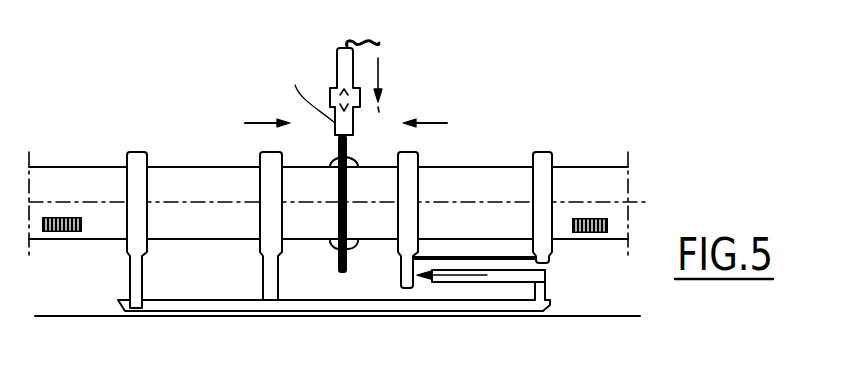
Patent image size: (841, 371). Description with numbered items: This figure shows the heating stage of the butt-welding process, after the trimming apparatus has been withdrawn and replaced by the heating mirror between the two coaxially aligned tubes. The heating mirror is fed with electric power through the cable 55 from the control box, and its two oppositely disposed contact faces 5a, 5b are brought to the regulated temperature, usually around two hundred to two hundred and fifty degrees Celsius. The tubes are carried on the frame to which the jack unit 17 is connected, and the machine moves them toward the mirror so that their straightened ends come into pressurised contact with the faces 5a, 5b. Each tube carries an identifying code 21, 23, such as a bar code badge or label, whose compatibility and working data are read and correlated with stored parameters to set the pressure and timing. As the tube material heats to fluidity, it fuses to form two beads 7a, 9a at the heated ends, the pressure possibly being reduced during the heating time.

The contact face of the mirror 5a is at (335, 200).
The contact face of the mirror 5b is at (350, 183).
The bead 7a is at (331, 250).
The bead 9a is at (349, 250).
The jack unit 17 is at (517, 278).
The identifying code 21 is at (67, 233).
The identifying code 23 is at (595, 234).
The cable 55 is at (365, 38).